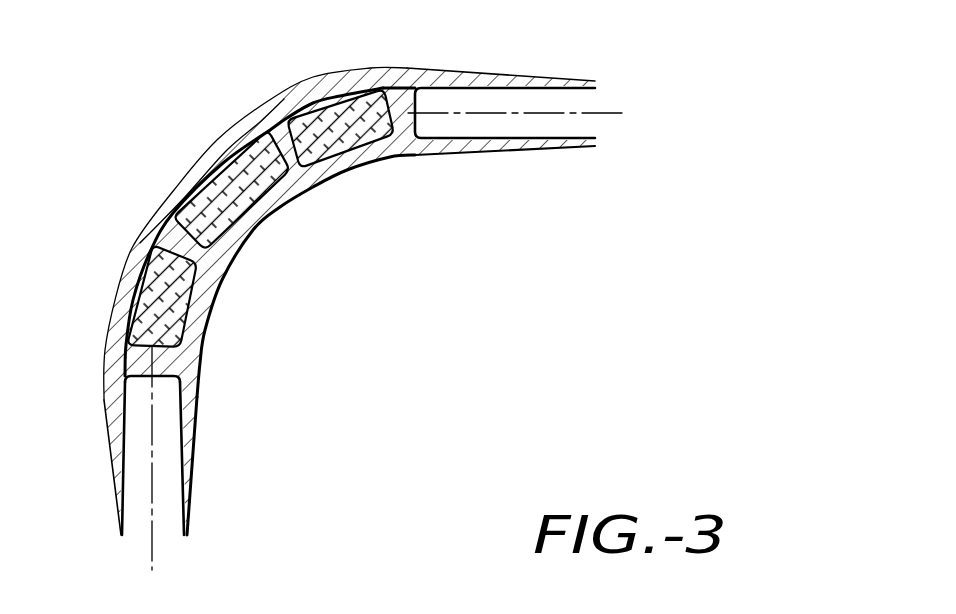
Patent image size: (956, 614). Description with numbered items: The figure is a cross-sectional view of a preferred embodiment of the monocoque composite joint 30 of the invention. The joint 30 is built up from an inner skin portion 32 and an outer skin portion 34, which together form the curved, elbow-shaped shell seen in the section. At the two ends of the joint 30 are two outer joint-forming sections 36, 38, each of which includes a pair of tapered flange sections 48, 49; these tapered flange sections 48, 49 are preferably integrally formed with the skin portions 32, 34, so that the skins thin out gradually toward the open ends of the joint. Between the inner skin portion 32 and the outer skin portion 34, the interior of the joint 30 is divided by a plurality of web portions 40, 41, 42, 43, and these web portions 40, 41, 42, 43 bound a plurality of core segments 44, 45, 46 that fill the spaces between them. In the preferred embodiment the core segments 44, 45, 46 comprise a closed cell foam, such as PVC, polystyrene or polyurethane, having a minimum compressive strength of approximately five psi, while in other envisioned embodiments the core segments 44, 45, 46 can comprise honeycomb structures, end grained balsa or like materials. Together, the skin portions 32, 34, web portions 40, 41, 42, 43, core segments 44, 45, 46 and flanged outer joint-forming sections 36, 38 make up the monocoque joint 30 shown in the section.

The joint 30 is at (146, 93).
The inner skin portion 32 is at (368, 162).
The outer skin portion 34 is at (333, 90).
The outer joint-forming section 36 is at (165, 478).
The outer joint-forming section 38 is at (468, 107).
The web portion 40 is at (405, 97).
The web portion 41 is at (272, 133).
The web portion 42 is at (157, 237).
The web portion 43 is at (123, 363).
The core segment 44 is at (392, 133).
The core segment 45 is at (240, 217).
The core segment 46 is at (170, 317).
The tapered flange section 48 is at (527, 77).
The tapered flange section 49 is at (118, 470).